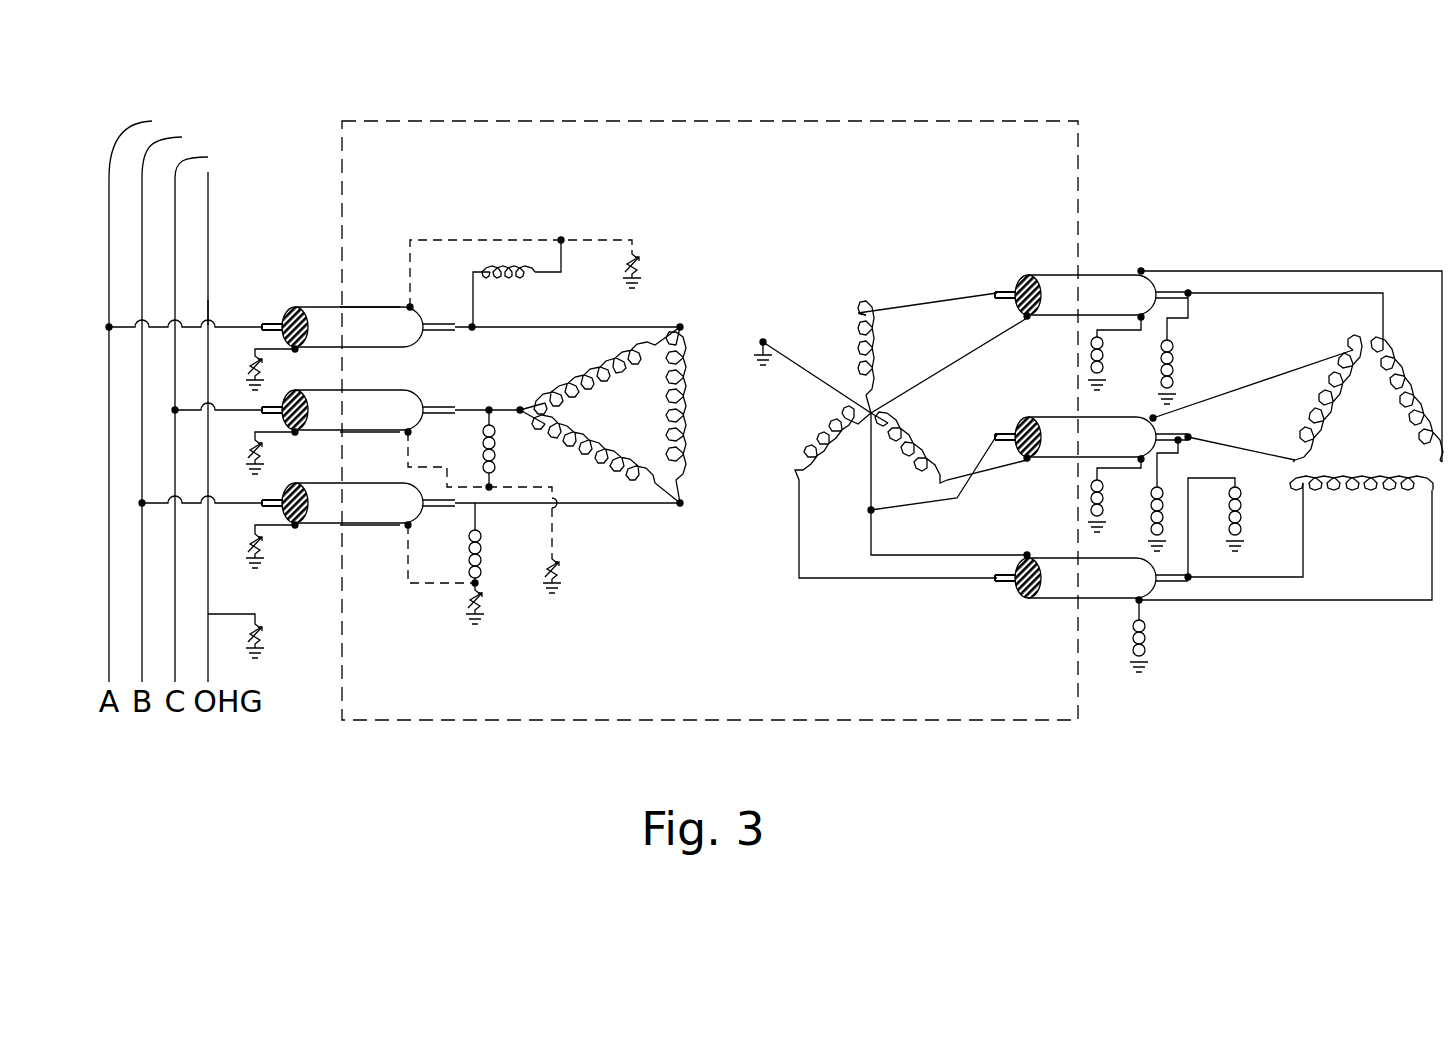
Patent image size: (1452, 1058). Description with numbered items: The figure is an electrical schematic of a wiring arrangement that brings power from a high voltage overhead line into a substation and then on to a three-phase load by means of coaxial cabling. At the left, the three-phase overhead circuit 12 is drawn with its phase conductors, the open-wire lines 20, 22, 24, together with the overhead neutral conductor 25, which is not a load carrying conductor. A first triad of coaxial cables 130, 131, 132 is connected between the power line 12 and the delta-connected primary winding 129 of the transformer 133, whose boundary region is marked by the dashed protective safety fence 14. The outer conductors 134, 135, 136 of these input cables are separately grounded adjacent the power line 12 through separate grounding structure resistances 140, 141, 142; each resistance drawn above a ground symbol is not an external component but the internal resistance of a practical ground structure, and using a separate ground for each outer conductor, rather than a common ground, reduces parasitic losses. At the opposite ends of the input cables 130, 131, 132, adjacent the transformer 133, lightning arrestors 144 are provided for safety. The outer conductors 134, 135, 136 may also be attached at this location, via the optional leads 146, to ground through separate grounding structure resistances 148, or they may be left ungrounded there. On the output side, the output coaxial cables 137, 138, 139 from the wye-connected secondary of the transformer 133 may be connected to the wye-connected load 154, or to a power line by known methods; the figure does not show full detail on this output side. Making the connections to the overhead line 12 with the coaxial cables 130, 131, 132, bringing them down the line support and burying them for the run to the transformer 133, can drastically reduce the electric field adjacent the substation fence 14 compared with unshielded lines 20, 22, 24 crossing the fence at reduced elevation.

The three-phase overhead circuit 12 is at (215, 225).
The protective safety fence 14 is at (636, 121).
The open-wire line 20 is at (152, 121).
The open-wire line 22 is at (182, 137).
The open-wire line 24 is at (208, 157).
The overhead neutral conductor 25 is at (208, 312).
The delta-connected primary winding 129 is at (686, 438).
The coaxial cable 130 is at (330, 300).
The coaxial cable 131 is at (373, 388).
The coaxial cable 132 is at (328, 530).
The transformer 133 is at (725, 330).
The outer conductor 134 is at (348, 307).
The outer conductor 135 is at (352, 432).
The outer conductor 136 is at (338, 525).
The output coaxial cable 137 is at (1090, 268).
The output coaxial cable 138 is at (1063, 408).
The output coaxial cable 139 is at (1062, 552).
The grounding structure resistance 140 is at (262, 364).
The grounding structure resistance 141 is at (262, 448).
The grounding structure resistance 142 is at (250, 543).
The lightning arrestor 144 is at (508, 282).
The optional lead 146 is at (442, 240).
The grounding structure resistance 148 is at (640, 256).
The wye-connected load 154 is at (1396, 500).